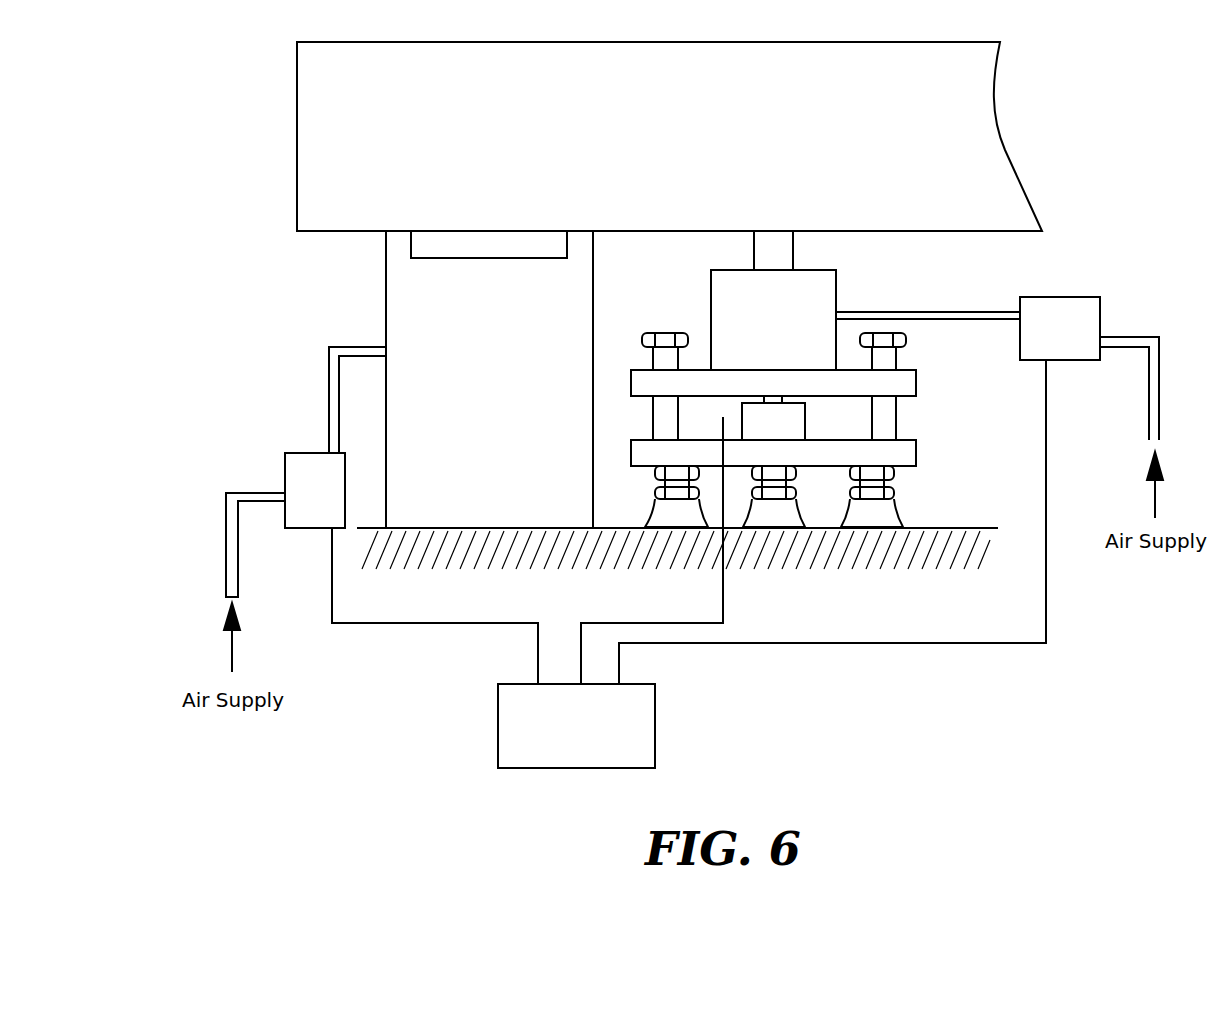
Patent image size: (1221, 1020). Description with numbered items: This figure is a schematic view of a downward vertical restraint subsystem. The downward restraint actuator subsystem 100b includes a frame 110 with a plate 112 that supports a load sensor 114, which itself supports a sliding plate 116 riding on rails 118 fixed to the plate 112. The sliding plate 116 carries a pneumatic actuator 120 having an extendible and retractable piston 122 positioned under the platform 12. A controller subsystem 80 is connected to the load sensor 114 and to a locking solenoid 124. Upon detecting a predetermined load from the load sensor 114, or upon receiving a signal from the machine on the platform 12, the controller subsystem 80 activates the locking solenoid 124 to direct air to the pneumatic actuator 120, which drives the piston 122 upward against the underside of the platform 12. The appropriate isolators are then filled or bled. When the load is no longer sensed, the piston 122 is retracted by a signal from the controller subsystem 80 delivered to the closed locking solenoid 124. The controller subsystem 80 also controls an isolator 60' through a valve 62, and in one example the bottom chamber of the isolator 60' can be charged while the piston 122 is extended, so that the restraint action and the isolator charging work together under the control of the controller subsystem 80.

The platform 12 is at (310, 106).
The isolator 60' is at (489, 379).
The valve 62 is at (328, 505).
The controller subsystem 80 is at (590, 738).
The downward restraint actuator subsystem 100b is at (920, 378).
The frame 110 is at (771, 406).
The plate 112 is at (918, 452).
The load sensor 114 is at (792, 437).
The sliding plate 116 is at (640, 370).
The rails 118 is at (759, 364).
The pneumatic actuator 120 is at (792, 328).
The piston 122 is at (782, 250).
The locking solenoid 124 is at (1079, 341).